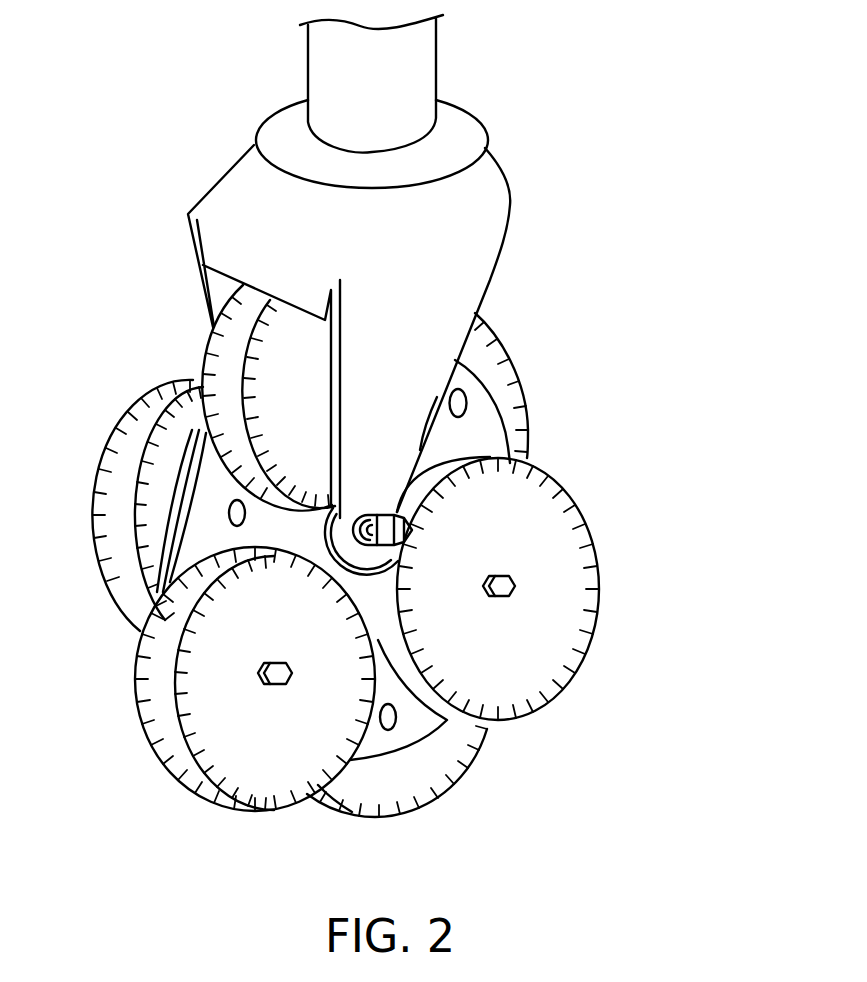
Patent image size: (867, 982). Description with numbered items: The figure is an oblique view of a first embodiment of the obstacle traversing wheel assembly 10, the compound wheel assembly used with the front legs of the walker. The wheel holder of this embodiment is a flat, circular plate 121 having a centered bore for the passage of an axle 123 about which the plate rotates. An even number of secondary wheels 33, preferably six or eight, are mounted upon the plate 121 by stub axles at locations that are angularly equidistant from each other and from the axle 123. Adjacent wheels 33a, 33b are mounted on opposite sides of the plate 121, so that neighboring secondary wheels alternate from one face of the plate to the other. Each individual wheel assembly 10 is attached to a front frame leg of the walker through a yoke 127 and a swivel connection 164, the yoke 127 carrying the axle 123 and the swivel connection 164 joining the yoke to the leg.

The obstacle traversing wheel assembly 10 is at (690, 569).
The swivel connection 164 is at (457, 130).
The yoke 127 is at (495, 217).
The axle 123 is at (408, 537).
The secondary wheels 33 is at (95, 525).
The flat, circular plate 121 is at (205, 546).
The adjacent wheel 33a is at (473, 767).
The adjacent wheel 33b is at (577, 540).